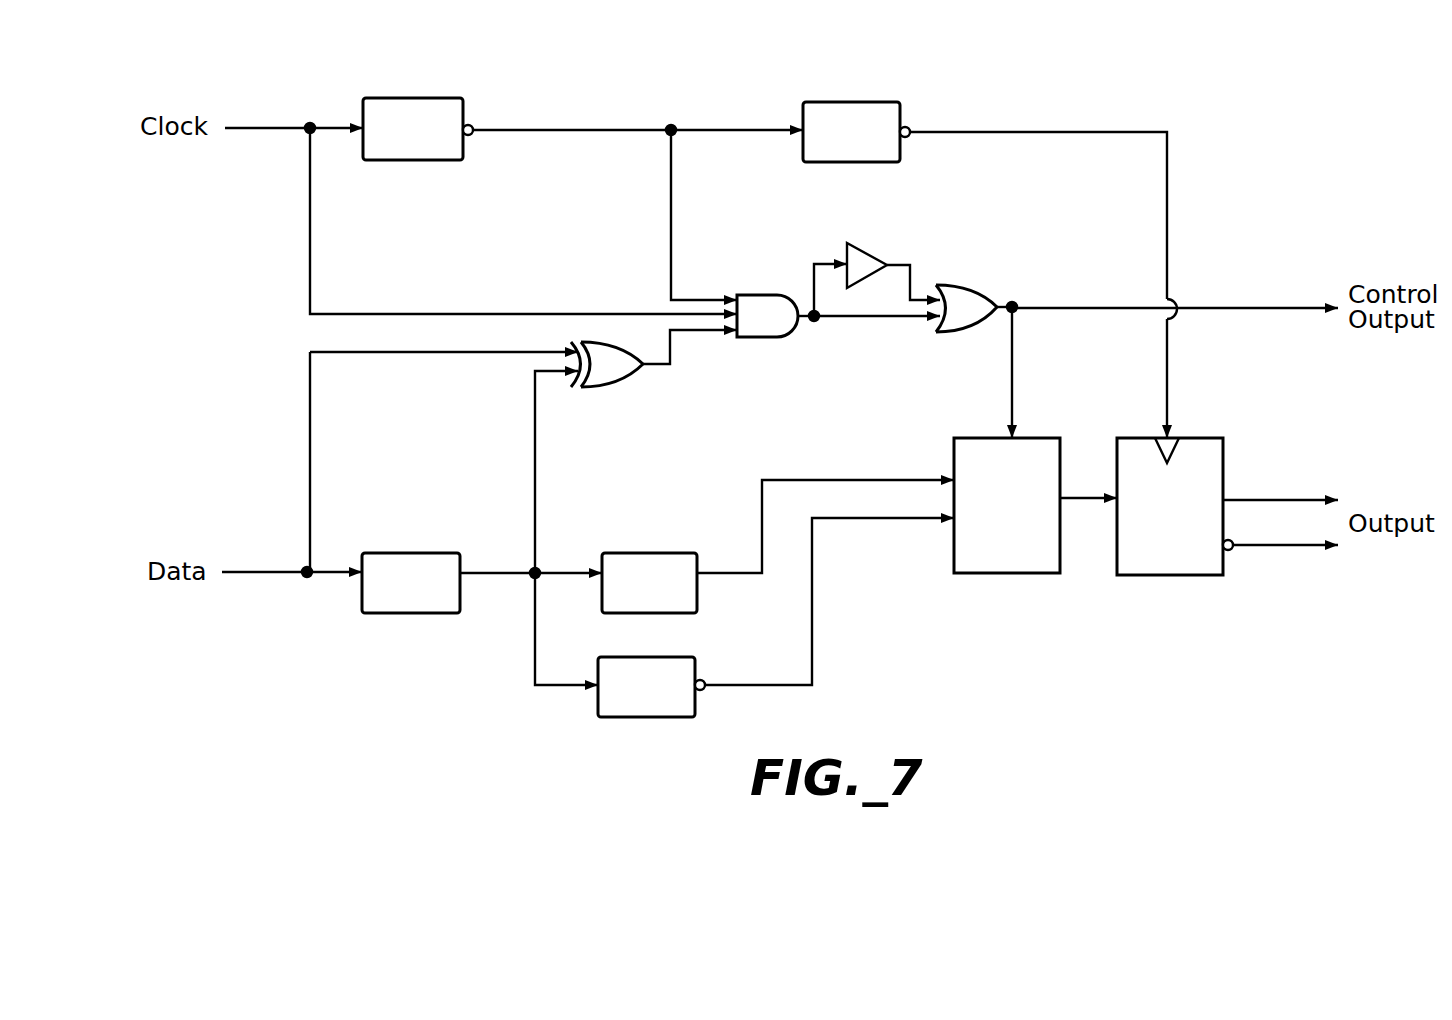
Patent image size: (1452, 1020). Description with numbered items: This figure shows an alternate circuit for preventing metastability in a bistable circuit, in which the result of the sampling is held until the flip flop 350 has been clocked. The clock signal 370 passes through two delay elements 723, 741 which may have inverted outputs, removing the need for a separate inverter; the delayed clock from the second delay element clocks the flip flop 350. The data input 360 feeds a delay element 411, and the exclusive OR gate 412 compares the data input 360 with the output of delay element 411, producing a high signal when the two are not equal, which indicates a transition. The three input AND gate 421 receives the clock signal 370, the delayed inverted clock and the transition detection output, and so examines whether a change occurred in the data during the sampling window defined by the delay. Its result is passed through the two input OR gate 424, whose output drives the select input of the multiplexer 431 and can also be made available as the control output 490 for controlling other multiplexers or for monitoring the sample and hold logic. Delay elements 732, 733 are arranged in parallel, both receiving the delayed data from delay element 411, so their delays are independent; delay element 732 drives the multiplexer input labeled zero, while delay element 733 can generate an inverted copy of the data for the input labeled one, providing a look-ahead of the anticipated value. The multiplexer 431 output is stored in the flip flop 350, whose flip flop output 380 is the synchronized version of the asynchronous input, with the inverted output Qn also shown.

The clock signal 370 is at (293, 132).
The delay element 723 is at (440, 163).
The delay element 741 is at (880, 164).
The three input AND gate 421 is at (760, 339).
The two input OR gate 424 is at (950, 334).
The exclusive OR gate 412 is at (596, 389).
The control output 490 is at (1215, 312).
The data input 360 is at (290, 575).
The delay element 411 is at (382, 553).
The delay element 732 is at (650, 553).
The delay element 733 is at (648, 657).
The multiplexer 431 is at (1038, 574).
The flip flop 350 is at (1190, 438).
The flip flop output 380 is at (1248, 499).